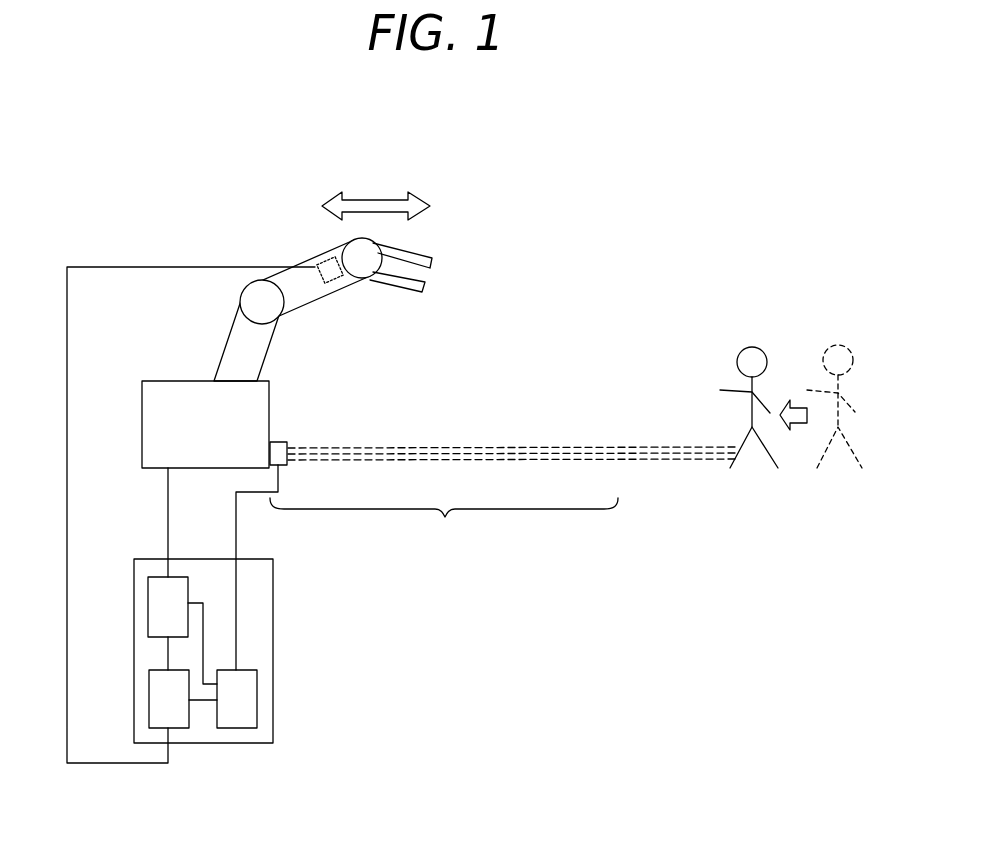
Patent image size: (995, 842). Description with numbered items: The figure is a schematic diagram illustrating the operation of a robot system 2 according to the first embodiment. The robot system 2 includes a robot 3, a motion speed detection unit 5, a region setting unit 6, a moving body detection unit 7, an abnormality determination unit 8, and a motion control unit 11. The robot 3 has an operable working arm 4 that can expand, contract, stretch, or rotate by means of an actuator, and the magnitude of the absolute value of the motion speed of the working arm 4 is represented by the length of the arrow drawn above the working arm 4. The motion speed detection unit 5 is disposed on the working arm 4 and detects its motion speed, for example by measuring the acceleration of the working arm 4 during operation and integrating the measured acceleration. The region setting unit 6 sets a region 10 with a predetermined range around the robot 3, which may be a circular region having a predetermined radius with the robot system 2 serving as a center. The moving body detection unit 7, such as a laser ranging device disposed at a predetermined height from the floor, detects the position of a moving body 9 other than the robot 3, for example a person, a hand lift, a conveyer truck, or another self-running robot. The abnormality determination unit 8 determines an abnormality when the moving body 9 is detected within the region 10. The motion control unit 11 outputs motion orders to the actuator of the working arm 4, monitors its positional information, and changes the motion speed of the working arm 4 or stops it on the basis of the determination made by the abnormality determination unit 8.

The robot system 2 is at (204, 215).
The robot 3 is at (185, 390).
The working arm 4 is at (320, 262).
The motion speed detection unit 5 is at (333, 278).
The region setting unit 6 is at (157, 700).
The moving body detection unit 7 is at (282, 445).
The abnormality determination unit 8 is at (237, 703).
The moving body 9 is at (752, 387).
The region 10 is at (504, 498).
The motion control unit 11 is at (163, 602).